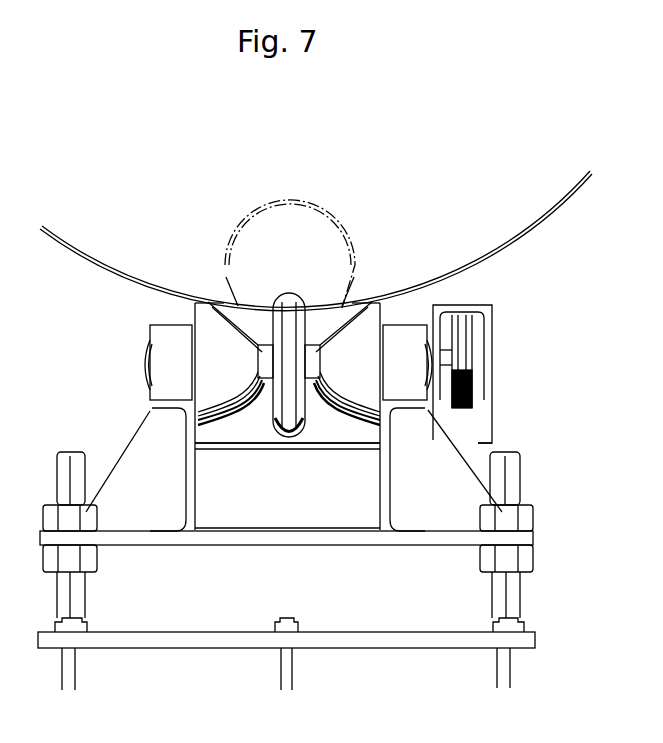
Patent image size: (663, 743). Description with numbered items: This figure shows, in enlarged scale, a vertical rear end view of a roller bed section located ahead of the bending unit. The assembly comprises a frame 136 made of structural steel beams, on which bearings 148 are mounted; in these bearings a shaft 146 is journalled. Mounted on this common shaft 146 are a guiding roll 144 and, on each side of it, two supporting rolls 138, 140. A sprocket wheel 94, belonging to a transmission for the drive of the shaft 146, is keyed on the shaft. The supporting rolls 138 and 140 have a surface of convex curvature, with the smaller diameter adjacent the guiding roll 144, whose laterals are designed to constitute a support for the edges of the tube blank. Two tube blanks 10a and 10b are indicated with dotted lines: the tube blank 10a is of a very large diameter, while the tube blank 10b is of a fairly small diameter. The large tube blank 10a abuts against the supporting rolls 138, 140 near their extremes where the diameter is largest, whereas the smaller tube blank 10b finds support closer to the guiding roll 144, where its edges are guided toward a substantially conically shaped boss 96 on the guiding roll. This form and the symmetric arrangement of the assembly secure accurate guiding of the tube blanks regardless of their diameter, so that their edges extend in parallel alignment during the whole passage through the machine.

The tube blank 10a is at (72, 236).
The tube blank 10b is at (346, 244).
The sprocket wheel 94 is at (446, 420).
The conically shaped boss 96 is at (302, 315).
The frame 136 is at (188, 512).
The supporting roll 138 is at (262, 418).
The supporting roll 140 is at (362, 424).
The guiding roll 144 is at (262, 446).
The shaft 146 is at (445, 350).
The bearing 148 is at (160, 330).